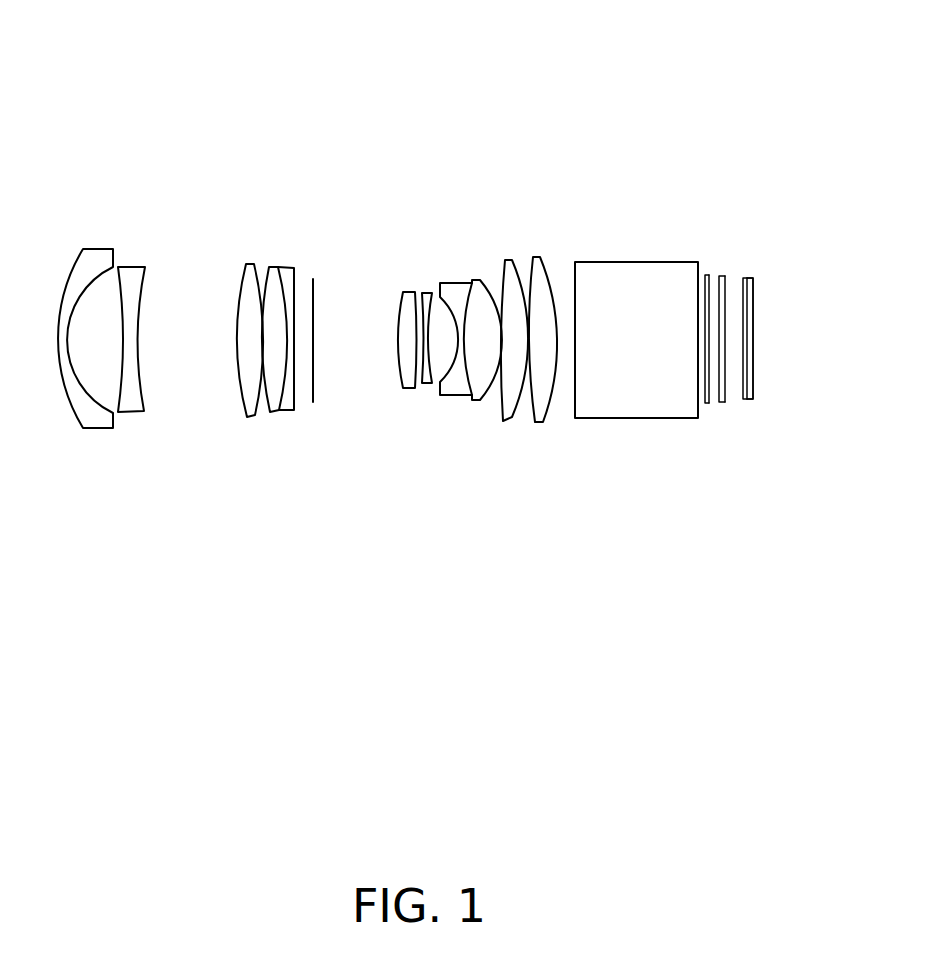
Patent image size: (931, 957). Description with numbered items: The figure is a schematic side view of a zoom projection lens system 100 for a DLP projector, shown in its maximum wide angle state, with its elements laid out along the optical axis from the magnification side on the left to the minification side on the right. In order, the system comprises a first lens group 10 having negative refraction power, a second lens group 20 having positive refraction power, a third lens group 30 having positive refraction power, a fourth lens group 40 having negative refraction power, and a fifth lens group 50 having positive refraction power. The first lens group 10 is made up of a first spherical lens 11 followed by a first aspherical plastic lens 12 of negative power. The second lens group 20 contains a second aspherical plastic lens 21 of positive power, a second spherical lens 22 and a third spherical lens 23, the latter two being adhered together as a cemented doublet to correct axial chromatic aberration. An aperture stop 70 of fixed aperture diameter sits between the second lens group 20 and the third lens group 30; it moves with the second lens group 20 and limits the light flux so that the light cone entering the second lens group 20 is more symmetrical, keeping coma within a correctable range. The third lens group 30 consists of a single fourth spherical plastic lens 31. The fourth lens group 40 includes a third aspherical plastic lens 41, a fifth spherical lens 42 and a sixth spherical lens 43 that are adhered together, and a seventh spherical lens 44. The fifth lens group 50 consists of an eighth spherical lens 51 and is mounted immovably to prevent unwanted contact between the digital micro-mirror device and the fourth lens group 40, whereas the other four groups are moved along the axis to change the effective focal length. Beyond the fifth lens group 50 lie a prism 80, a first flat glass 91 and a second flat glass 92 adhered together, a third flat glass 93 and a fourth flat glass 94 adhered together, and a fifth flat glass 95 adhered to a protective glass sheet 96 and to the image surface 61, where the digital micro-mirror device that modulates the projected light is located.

The zoom projection lens system 100 is at (440, 43).
The first lens group 10 is at (157, 507).
The first spherical lens 11 is at (97, 423).
The first aspherical plastic lens 12 is at (138, 408).
The second lens group 20 is at (203, 507).
The second aspherical plastic lens 21 is at (247, 407).
The second spherical lens 22 is at (275, 400).
The third spherical lens 23 is at (288, 410).
The aperture stop 70 is at (315, 290).
The third lens group 30 is at (381, 379).
The fourth spherical plastic lens 31 is at (405, 372).
The fourth lens group 40 is at (528, 207).
The third aspherical plastic lens 41 is at (428, 295).
The fifth spherical lens 42 is at (452, 287).
The sixth spherical lens 43 is at (477, 285).
The seventh spherical lens 44 is at (508, 262).
The fifth lens group 50 is at (567, 371).
The eighth spherical lens 51 is at (538, 418).
The prism 80 is at (612, 268).
The first flat glass 91 is at (706, 404).
The second flat glass 92 is at (709, 404).
The third flat glass 93 is at (722, 276).
The fourth flat glass 94 is at (725, 276).
The fifth flat glass 95 is at (744, 400).
The protective glass sheet 96 is at (751, 285).
The image surface 61 is at (782, 360).